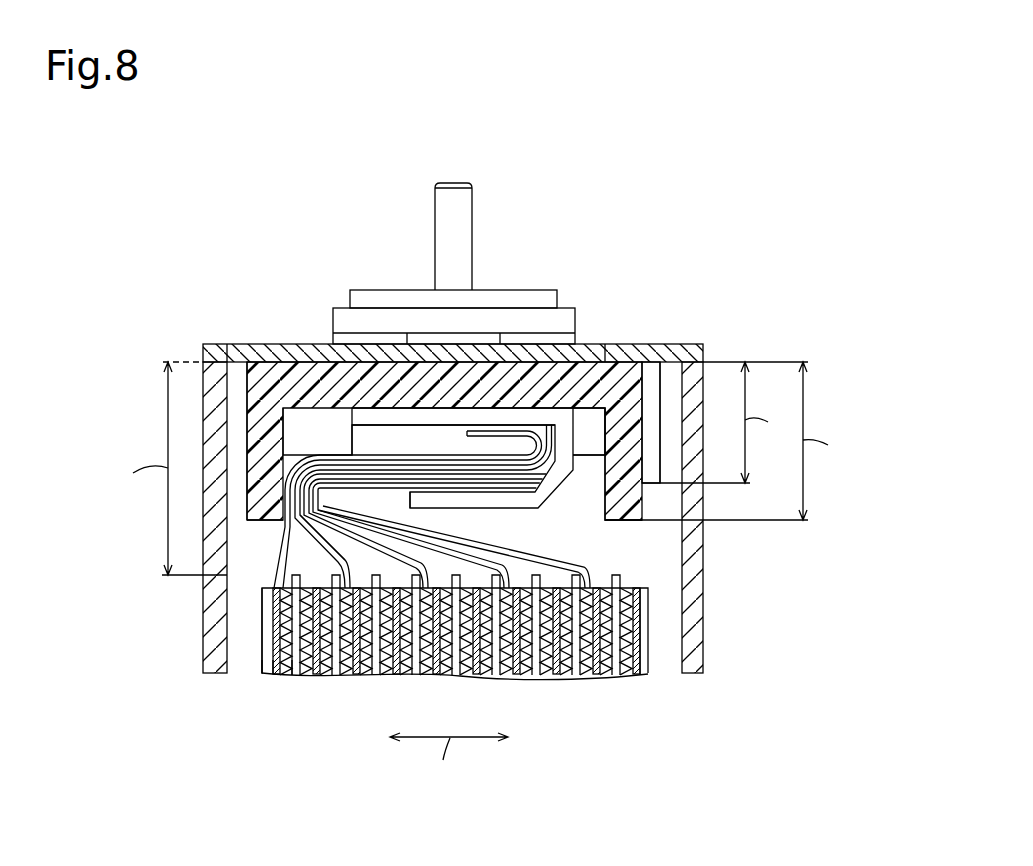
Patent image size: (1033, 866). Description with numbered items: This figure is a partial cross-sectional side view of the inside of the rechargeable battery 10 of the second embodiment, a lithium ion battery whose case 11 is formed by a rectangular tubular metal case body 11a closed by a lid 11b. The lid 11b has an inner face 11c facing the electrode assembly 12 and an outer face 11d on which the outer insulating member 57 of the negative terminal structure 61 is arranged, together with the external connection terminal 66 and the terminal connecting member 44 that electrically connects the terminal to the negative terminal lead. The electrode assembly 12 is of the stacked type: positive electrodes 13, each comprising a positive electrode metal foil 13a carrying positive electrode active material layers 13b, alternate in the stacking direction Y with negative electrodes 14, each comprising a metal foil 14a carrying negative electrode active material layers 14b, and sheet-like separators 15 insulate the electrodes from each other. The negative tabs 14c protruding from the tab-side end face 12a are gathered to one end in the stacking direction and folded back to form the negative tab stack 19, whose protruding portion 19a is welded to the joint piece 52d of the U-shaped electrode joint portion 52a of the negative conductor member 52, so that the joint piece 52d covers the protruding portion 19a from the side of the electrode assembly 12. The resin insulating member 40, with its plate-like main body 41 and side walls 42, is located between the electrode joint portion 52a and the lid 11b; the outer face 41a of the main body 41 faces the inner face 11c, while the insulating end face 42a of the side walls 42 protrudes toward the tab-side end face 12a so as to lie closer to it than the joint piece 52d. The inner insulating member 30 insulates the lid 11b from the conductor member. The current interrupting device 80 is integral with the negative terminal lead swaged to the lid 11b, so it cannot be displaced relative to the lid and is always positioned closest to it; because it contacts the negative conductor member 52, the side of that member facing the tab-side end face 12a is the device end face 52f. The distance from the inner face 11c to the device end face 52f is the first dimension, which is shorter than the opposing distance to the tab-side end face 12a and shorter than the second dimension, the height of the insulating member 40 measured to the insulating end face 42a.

The rechargeable battery 10 is at (680, 235).
The case 11 is at (260, 268).
The case body 11a is at (238, 362).
The lid 11b is at (227, 360).
The inner face 11c is at (619, 362).
The outer face 11d is at (645, 360).
The electrode assembly 12 is at (655, 606).
The tab-side end face 12a is at (613, 573).
The positive electrode 13 is at (537, 682).
The positive electrode metal foil 13a is at (552, 683).
The positive electrode active material layer 13b is at (543, 682).
The negative electrode 14 is at (262, 625).
The metal foil 14a is at (278, 673).
The negative electrode active material layer 14b is at (287, 665).
The negative tab 14c is at (505, 553).
The separator 15 is at (323, 570).
The negative tab stack 19 is at (328, 447).
The protruding portion 19a is at (392, 488).
The inner insulating member 30 is at (663, 377).
The insulating member 40 is at (313, 373).
The main body 41 is at (597, 372).
The outer face 41a is at (288, 360).
The side wall 42 is at (645, 428).
The insulating end face 42a is at (260, 522).
The terminal connecting member 44 is at (533, 290).
The negative conductor member 52 is at (557, 500).
The electrode joint portion 52a is at (378, 422).
The joint piece 52d is at (422, 505).
The device end face 52f is at (588, 483).
The outer insulating member 57 is at (567, 308).
The negative terminal structure 61 is at (490, 168).
The external connection terminal 66 is at (453, 183).
The current interrupting device 80 is at (655, 495).